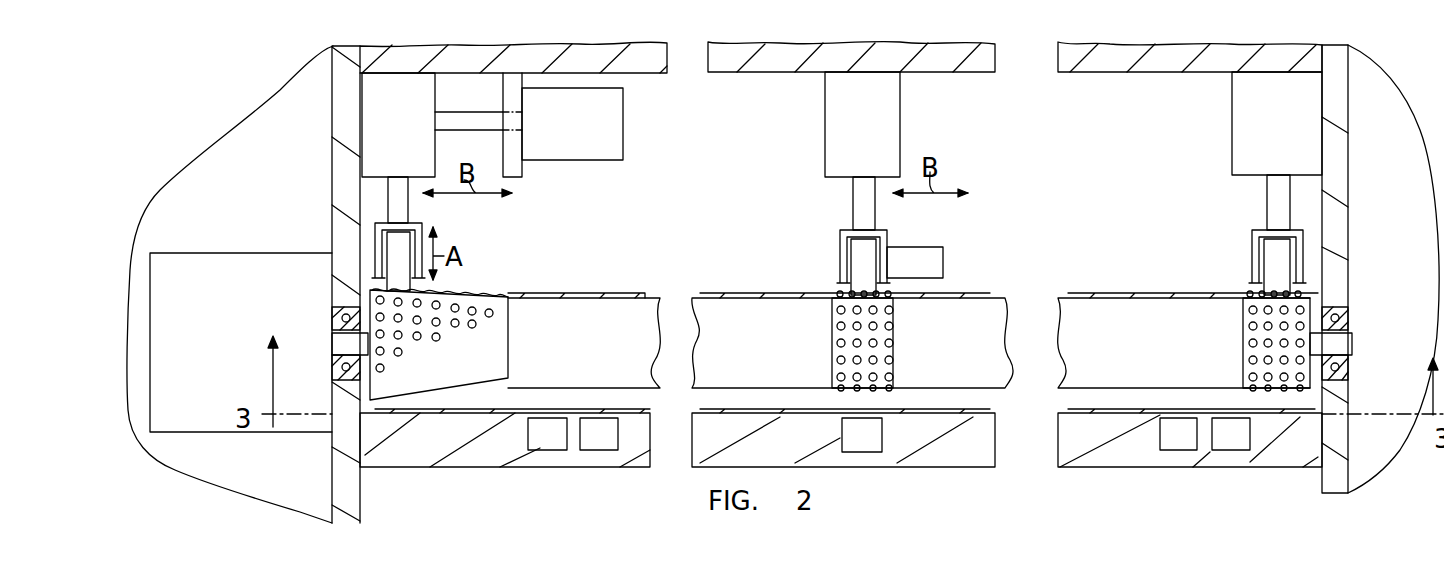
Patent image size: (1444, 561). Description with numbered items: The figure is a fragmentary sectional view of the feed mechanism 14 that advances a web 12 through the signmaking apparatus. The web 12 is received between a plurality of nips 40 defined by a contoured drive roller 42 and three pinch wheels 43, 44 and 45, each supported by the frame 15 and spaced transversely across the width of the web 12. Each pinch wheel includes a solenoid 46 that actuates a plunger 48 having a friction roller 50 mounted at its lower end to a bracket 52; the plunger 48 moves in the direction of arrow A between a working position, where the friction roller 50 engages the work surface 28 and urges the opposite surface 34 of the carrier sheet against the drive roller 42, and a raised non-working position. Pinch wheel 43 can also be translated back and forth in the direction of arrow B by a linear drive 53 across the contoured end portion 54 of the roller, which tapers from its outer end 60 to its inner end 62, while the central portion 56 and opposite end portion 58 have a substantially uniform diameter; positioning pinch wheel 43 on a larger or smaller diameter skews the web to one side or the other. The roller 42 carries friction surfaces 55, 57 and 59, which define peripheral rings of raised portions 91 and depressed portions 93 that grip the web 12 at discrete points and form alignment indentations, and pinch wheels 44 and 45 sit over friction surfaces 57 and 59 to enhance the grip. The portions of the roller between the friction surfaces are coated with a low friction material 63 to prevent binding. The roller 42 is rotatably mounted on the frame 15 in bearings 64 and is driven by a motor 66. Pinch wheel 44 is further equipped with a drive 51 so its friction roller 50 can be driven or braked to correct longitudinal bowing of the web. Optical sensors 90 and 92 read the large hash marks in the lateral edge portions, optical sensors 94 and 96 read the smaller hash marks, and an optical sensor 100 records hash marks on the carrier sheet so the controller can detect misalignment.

The frame 15 is at (594, 40).
The solenoid 46 is at (418, 112).
The linear drive 53 is at (612, 118).
The plunger 48 is at (392, 194).
The bracket 52 is at (424, 224).
The friction roller 50 is at (392, 246).
The pinch wheel 43 is at (452, 234).
The pinch wheel 44 is at (827, 233).
The pinch wheel 45 is at (1195, 220).
The web 12 is at (1090, 277).
The feed mechanism 14 is at (937, 478).
The motor 66 is at (264, 253).
The bearings 64 is at (340, 306).
The nips 40 is at (456, 324).
The friction surface 55 is at (460, 292).
The friction surface 59 is at (893, 316).
The friction surface 57 is at (1303, 380).
The raised portions 91 is at (488, 306).
The depressed portions 93 is at (467, 328).
The low friction material 63 is at (587, 313).
The drive roller 42 is at (667, 298).
The work surface 28 is at (1134, 280).
The opposite surface 34 is at (1166, 303).
The contoured end portion 54 is at (453, 393).
The outer end 60 is at (388, 413).
The inner end 62 is at (503, 385).
The optical sensor 90 is at (545, 438).
The optical sensor 94 is at (600, 437).
The central portion 56 is at (760, 392).
The optical sensor 100 is at (874, 440).
The opposite end portion 58 is at (1307, 393).
The optical sensor 96 is at (1170, 443).
The optical sensor 92 is at (1233, 442).
The drive 51 is at (920, 247).